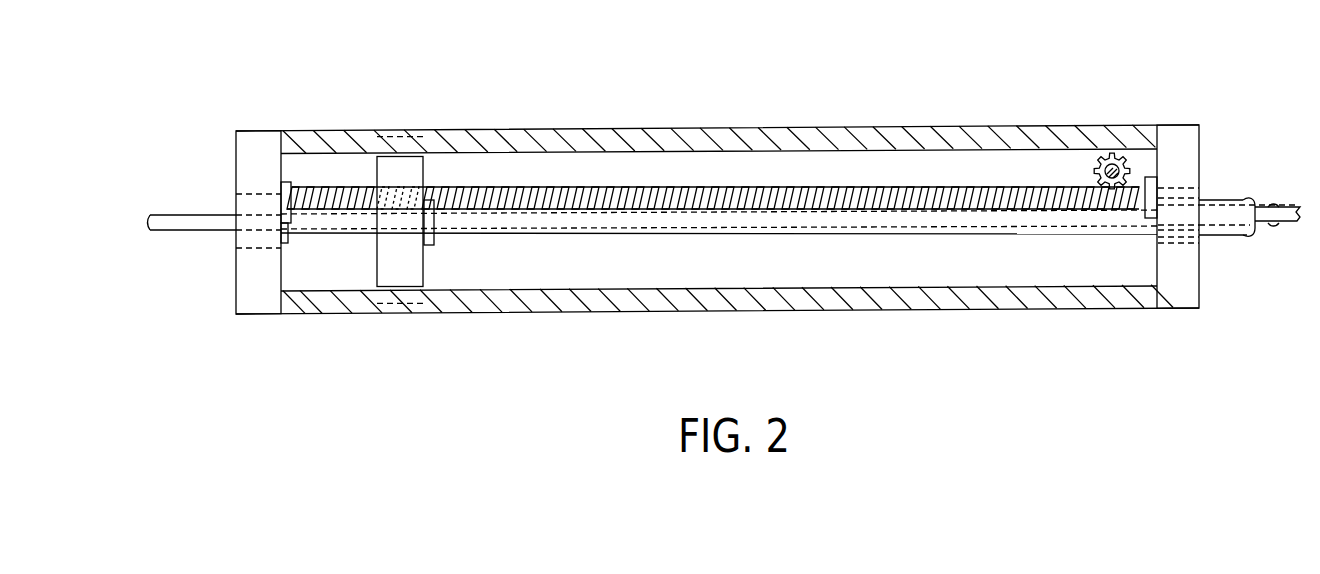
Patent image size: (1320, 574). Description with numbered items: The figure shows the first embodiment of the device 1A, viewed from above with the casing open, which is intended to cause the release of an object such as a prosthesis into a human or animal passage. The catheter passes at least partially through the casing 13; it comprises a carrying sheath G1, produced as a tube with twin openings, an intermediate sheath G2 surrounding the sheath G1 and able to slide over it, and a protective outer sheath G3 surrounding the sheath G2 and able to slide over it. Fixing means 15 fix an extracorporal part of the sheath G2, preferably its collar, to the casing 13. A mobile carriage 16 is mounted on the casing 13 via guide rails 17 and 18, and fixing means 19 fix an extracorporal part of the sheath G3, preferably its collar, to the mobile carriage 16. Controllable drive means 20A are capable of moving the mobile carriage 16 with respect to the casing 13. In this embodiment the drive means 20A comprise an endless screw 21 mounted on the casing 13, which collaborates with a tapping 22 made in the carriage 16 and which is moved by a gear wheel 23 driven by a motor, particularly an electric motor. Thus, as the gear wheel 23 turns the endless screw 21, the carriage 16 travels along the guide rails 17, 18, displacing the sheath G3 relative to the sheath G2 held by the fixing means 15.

The device 1A is at (724, 206).
The casing 13 is at (1187, 125).
The fixing means 15 is at (289, 262).
The mobile carriage 16 is at (374, 164).
The guide rail 17 is at (596, 128).
The guide rail 18 is at (572, 311).
The fixing means 19 is at (432, 265).
The drive means 20A is at (1022, 163).
The endless screw 21 is at (830, 186).
The tapping 22 is at (401, 178).
The gear wheel 23 is at (1105, 152).
The carrying sheath G1 is at (190, 231).
The intermediate sheath G2 is at (334, 234).
The protective outer sheath G3 is at (1230, 198).